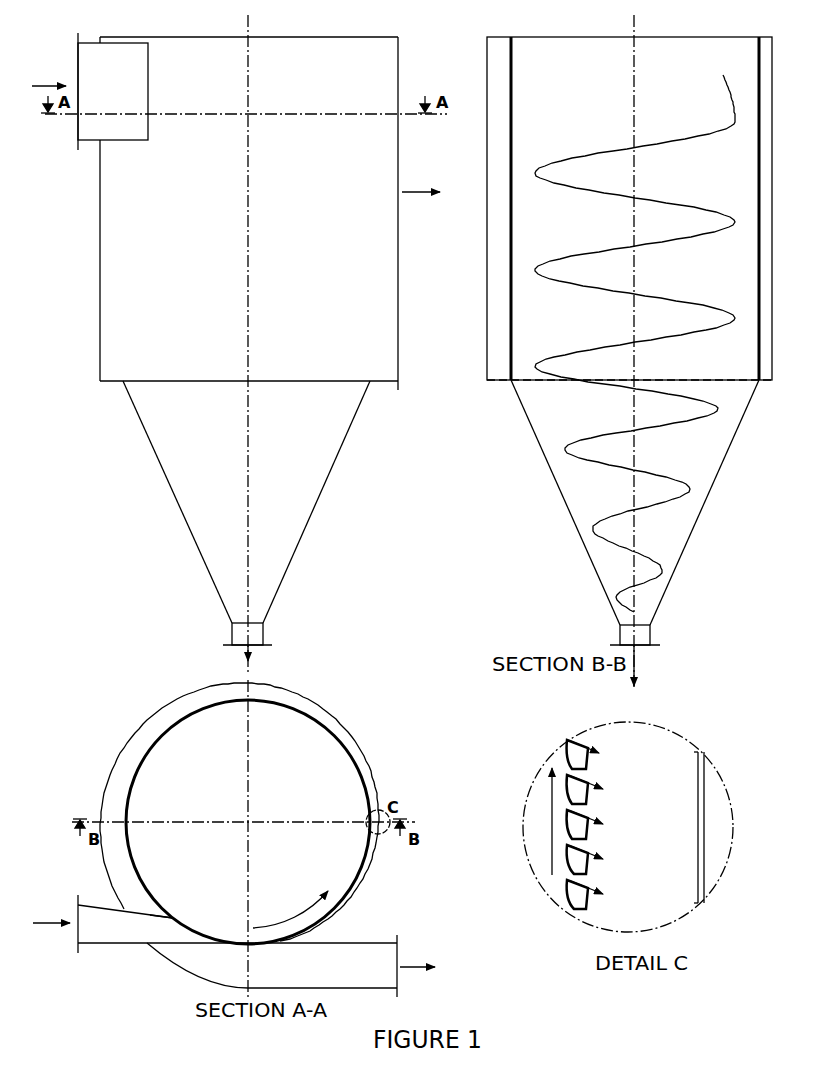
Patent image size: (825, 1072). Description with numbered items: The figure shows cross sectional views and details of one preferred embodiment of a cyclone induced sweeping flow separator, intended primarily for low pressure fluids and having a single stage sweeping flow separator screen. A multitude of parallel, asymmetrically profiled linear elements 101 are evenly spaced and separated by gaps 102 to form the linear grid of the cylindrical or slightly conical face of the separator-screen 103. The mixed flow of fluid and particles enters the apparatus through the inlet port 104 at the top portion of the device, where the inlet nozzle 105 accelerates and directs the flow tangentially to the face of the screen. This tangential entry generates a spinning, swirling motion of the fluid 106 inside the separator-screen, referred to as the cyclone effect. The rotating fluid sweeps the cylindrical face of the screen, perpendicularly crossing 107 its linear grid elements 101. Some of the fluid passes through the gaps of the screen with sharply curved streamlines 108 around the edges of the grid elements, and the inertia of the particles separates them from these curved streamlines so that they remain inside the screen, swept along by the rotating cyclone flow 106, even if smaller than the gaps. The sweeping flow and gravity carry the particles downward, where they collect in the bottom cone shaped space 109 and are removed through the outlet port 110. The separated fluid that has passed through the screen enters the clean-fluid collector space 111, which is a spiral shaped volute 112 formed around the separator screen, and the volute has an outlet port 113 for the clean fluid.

The linear elements 101 is at (578, 896).
The gaps 102 is at (596, 757).
The separator-screen 103 is at (356, 768).
The inlet port 104 is at (78, 140).
The inlet nozzle 105 is at (163, 928).
The rotating fluid 106 is at (593, 195).
The sweeping flow crossing grid elements 107 is at (548, 868).
The curved streamlines 108 is at (598, 857).
The cone shaped space 109 is at (148, 438).
The outlet port 110 is at (240, 650).
The clean-fluid collector space 111 is at (500, 335).
The spiral shaped volute 112 is at (100, 283).
The outlet port 113 is at (399, 222).